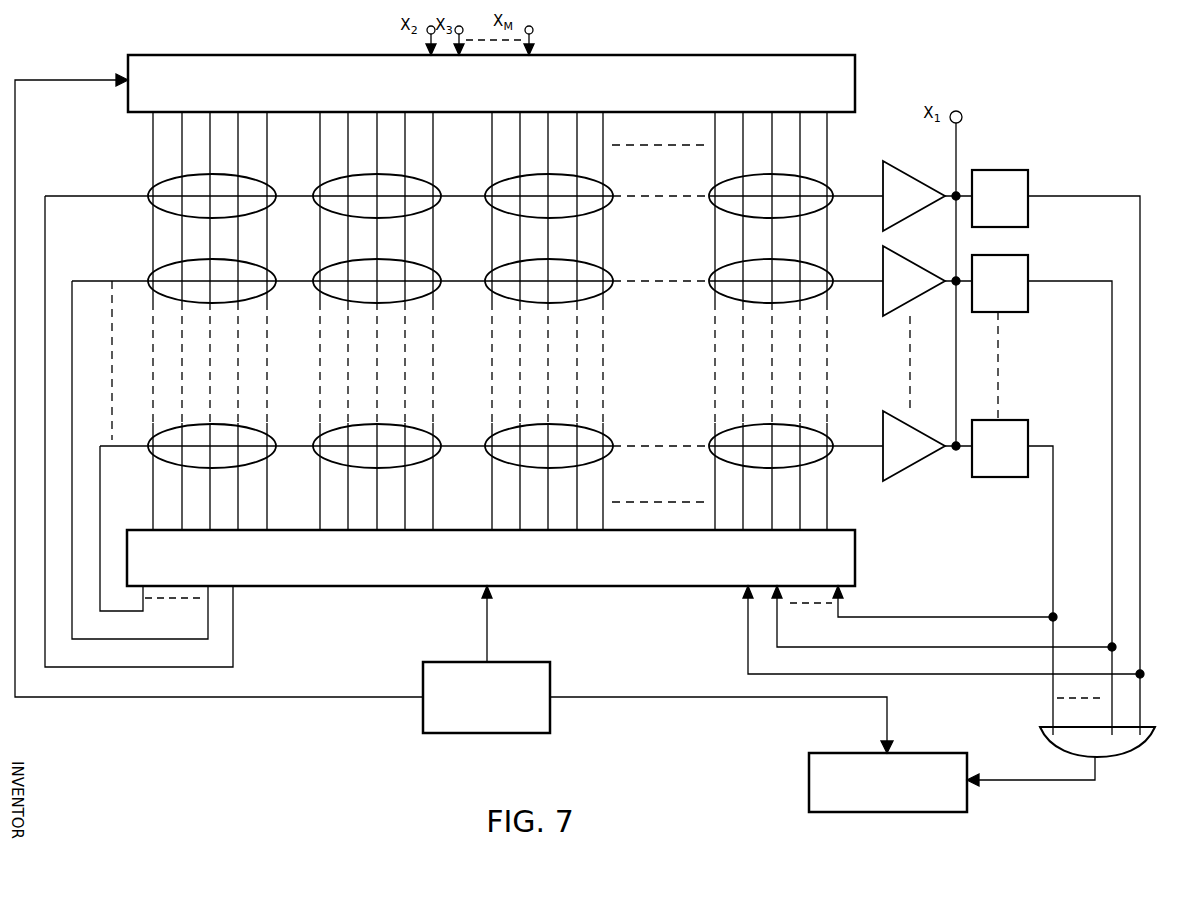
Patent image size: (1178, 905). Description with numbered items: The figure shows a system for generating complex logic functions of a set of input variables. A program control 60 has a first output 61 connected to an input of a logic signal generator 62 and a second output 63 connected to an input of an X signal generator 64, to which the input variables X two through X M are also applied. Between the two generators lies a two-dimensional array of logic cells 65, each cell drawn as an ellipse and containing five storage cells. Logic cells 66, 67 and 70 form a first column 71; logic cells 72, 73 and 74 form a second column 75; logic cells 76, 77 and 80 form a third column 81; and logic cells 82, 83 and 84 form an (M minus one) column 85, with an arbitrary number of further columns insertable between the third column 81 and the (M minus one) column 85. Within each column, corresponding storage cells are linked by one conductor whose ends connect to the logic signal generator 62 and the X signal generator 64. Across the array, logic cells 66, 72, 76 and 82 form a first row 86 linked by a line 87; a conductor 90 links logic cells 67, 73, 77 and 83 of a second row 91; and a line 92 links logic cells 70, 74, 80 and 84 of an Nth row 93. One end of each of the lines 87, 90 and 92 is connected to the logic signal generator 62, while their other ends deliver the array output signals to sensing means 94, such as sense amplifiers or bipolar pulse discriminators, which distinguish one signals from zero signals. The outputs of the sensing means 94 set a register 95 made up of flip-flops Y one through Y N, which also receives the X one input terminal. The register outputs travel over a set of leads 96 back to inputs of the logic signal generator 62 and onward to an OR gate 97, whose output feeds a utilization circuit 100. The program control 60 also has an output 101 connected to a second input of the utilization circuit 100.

The program control 60 is at (520, 662).
The first output 61 is at (487, 655).
The logic signal generator 62 is at (375, 588).
The second output 63 is at (423, 710).
The X signal generator 64 is at (360, 55).
The two-dimensional array of logic cells 65 is at (648, 366).
The logic cell 66 is at (148, 194).
The logic cell 67 is at (148, 280).
The logic cell 70 is at (148, 447).
The first column 71 is at (185, 361).
The logic cell 72 is at (313, 195).
The logic cell 73 is at (313, 280).
The logic cell 74 is at (313, 447).
The second column 75 is at (353, 366).
The logic cell 76 is at (486, 195).
The logic cell 77 is at (486, 280).
The logic cell 80 is at (486, 447).
The third column 81 is at (525, 366).
The logic cell 82 is at (710, 195).
The logic cell 83 is at (710, 280).
The logic cell 84 is at (710, 447).
The (M-1) column 85 is at (745, 368).
The first row 86 is at (58, 182).
The line 87 is at (45, 230).
The conductor 90 is at (72, 366).
The second row 91 is at (65, 269).
The line 92 is at (100, 508).
The Nth row 93 is at (80, 436).
The sensing means 94 is at (858, 366).
The register 95 is at (1043, 371).
The leads 96 is at (1147, 441).
The OR gate 97 is at (1124, 748).
The utilization circuit 100 is at (915, 752).
The output 101 is at (553, 705).